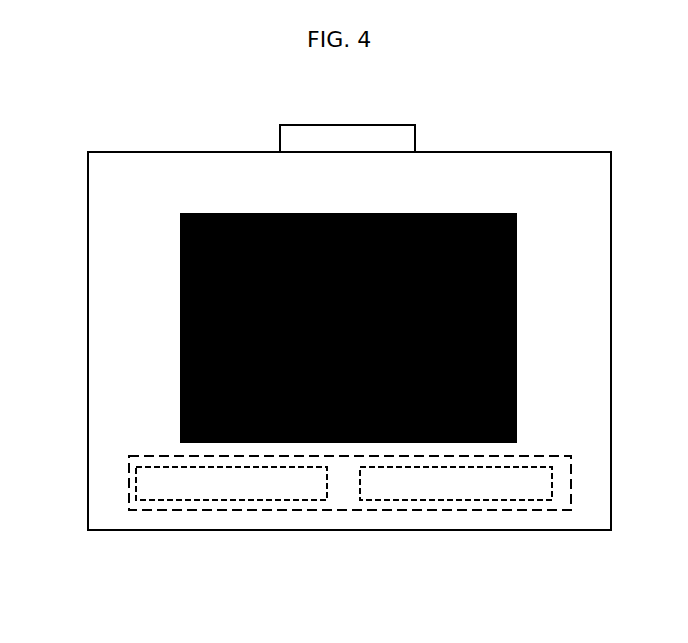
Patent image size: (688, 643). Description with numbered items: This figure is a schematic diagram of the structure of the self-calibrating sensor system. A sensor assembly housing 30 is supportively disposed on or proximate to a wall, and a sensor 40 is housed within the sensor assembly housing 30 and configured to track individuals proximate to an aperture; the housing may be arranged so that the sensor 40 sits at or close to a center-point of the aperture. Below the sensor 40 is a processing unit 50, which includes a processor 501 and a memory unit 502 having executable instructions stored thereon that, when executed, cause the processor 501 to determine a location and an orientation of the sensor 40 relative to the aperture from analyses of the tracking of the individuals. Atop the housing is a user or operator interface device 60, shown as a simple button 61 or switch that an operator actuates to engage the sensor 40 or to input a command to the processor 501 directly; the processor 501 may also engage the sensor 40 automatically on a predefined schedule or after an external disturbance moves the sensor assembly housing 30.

The sensor assembly housing 30 is at (88, 152).
The sensor 40 is at (227, 214).
The processing unit 50 is at (339, 492).
The processor 501 is at (232, 487).
The memory unit 502 is at (451, 487).
The user or operator interface device 60 is at (383, 133).
The button 61 is at (280, 128).